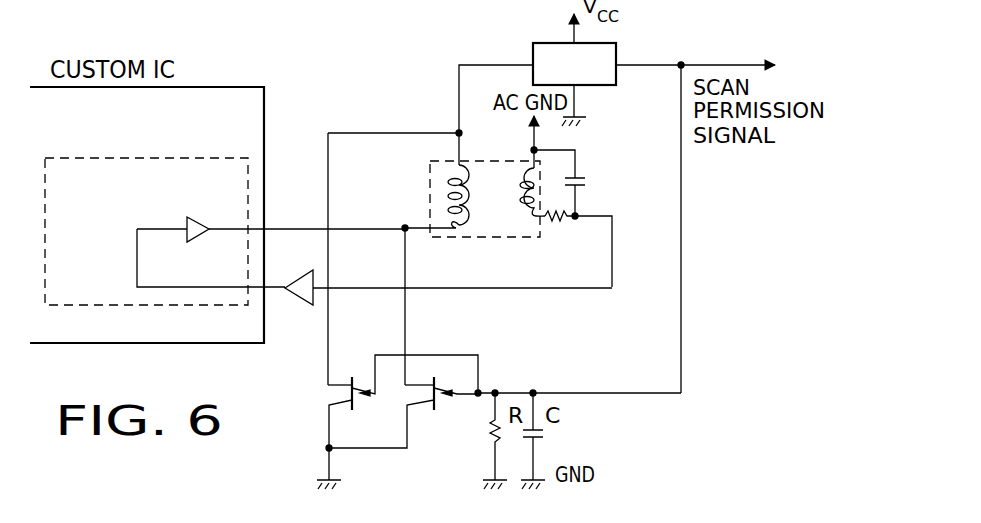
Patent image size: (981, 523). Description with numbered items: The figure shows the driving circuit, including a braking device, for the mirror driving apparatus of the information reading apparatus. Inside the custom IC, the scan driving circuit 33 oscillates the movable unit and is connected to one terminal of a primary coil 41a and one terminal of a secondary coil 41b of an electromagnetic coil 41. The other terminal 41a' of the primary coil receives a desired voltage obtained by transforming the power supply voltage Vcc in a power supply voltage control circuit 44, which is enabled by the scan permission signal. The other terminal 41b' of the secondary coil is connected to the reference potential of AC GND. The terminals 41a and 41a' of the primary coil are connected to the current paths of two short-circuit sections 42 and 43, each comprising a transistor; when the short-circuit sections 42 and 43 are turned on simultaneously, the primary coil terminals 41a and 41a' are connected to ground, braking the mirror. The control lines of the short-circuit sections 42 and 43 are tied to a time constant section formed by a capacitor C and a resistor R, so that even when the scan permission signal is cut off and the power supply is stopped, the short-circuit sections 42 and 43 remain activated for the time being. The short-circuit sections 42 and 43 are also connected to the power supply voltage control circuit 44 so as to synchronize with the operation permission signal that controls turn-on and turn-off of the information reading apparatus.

The scan driving circuit 33 is at (139, 158).
The electromagnetic coil 41 is at (428, 196).
The primary coil 41a is at (441, 220).
The other terminal of the primary coil 41a' is at (421, 152).
The secondary coil 41b is at (541, 221).
The other terminal of the secondary coil 41b' is at (580, 147).
The short-circuit section 42 is at (436, 377).
The short-circuit section 43 is at (352, 376).
The power supply voltage control circuit 44 is at (616, 50).